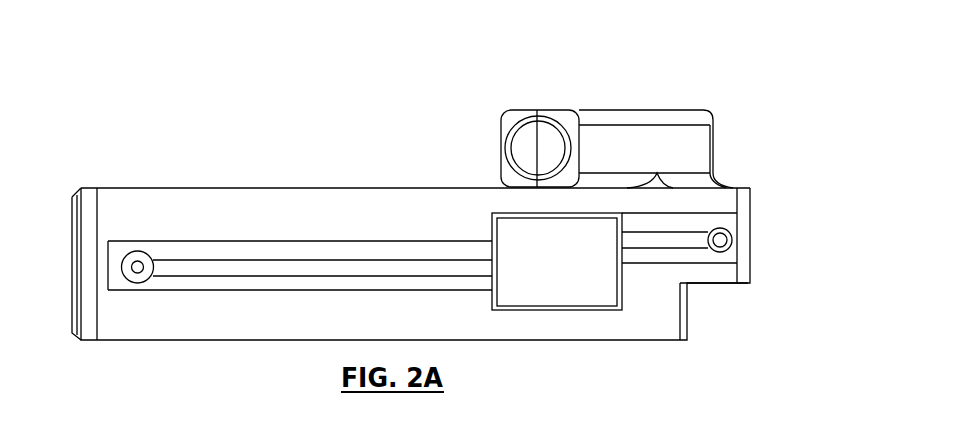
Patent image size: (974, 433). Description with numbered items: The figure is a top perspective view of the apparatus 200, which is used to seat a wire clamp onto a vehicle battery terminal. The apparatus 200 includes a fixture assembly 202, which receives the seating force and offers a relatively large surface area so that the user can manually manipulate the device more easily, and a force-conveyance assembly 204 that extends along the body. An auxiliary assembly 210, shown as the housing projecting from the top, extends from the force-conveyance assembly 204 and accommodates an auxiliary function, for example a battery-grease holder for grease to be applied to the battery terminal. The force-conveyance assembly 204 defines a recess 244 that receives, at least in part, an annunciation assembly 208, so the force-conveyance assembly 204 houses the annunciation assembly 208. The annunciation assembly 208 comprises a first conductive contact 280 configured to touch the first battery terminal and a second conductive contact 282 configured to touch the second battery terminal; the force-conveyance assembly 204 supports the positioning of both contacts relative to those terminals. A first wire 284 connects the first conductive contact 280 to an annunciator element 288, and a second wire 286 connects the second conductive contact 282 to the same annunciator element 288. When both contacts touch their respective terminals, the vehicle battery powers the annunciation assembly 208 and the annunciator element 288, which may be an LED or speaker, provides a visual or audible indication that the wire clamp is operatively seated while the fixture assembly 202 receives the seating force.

The apparatus 200 is at (235, 73).
The fixture assembly 202 is at (283, 129).
The force-conveyance assembly 204 is at (303, 212).
The annunciation assembly 208 is at (183, 125).
The auxiliary assembly 210 is at (508, 120).
The recess 244 is at (380, 253).
The first conductive contact 280 is at (720, 240).
The second conductive contact 282 is at (137, 267).
The first wire 284 is at (672, 242).
The second wire 286 is at (243, 270).
The annunciator element 288 is at (572, 275).